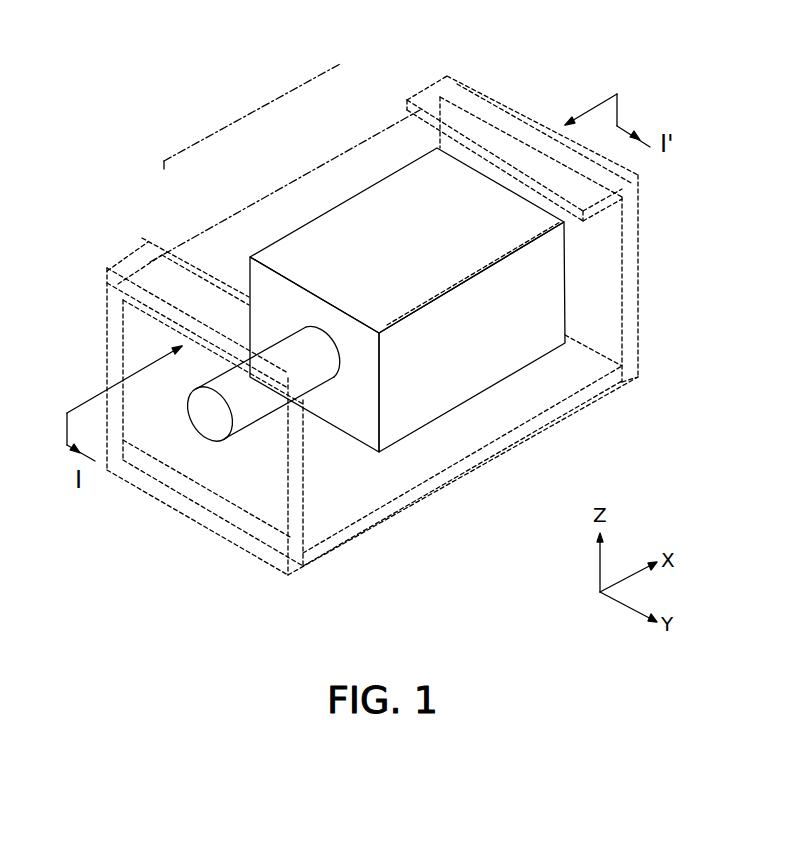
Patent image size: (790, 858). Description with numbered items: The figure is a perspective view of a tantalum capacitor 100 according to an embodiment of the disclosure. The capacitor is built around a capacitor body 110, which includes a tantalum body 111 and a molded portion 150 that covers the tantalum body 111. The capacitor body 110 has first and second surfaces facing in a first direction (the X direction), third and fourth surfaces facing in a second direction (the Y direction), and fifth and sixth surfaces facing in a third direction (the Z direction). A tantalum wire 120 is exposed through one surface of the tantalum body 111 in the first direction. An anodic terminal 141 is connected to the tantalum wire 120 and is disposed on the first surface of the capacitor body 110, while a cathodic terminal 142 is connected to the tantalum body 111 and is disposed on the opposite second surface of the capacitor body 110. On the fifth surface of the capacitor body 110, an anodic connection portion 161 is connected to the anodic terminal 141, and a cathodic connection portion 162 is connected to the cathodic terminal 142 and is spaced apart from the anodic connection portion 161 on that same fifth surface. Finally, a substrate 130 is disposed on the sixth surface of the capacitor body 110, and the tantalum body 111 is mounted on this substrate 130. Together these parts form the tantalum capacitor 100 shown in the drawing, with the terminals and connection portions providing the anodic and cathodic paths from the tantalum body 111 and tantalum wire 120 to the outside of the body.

The tantalum capacitor 100 is at (182, 77).
The capacitor body 110 is at (257, 110).
The tantalum body 111 is at (407, 264).
The tantalum wire 120 is at (193, 388).
The substrate 130 is at (488, 458).
The anodic terminal 141 is at (107, 271).
The cathodic terminal 142 is at (447, 77).
The molded portion 150 is at (303, 172).
The anodic connection portion 161 is at (150, 248).
The cathodic connection portion 162 is at (480, 82).